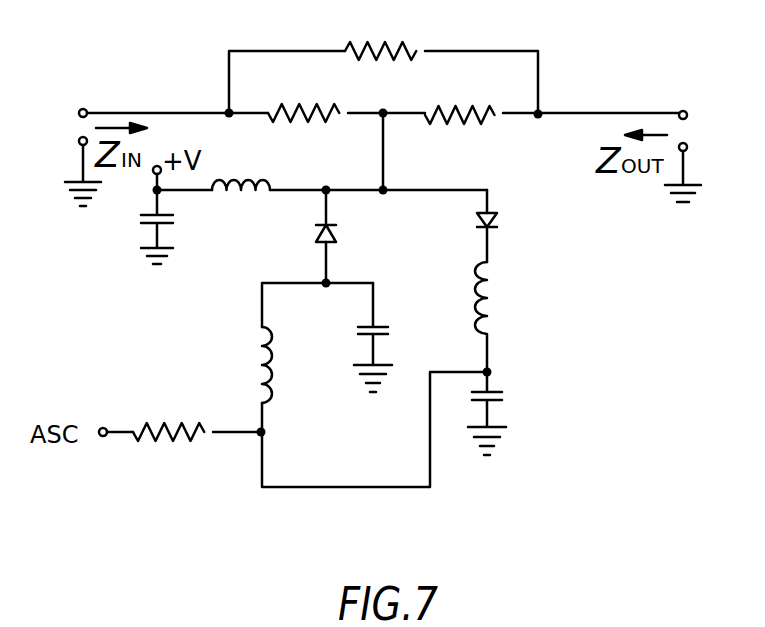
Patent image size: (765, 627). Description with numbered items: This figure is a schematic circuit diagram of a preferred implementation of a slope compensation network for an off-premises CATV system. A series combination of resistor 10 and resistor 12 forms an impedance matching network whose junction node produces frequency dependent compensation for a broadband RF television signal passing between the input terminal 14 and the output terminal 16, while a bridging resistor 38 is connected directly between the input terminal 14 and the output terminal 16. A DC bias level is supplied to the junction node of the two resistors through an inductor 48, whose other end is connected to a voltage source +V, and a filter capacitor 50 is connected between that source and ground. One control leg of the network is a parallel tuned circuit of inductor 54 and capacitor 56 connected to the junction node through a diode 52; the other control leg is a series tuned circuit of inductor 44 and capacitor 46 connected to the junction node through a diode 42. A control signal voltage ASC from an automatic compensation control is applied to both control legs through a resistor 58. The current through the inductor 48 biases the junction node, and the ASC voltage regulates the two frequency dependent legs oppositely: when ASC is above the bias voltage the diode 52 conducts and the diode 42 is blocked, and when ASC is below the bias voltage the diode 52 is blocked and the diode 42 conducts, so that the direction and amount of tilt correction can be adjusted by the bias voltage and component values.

The resistor 10 is at (306, 108).
The resistor 12 is at (460, 110).
The input terminal 14 is at (84, 108).
The output terminal 16 is at (684, 110).
The bridging resistor 38 is at (408, 53).
The diode 42 is at (498, 219).
The inductor 44 is at (494, 298).
The capacitor 46 is at (494, 391).
The inductor 48 is at (251, 187).
The filter capacitor 50 is at (165, 225).
The diode 52 is at (336, 232).
The inductor 54 is at (254, 340).
The capacitor 56 is at (380, 327).
The resistor 58 is at (170, 443).